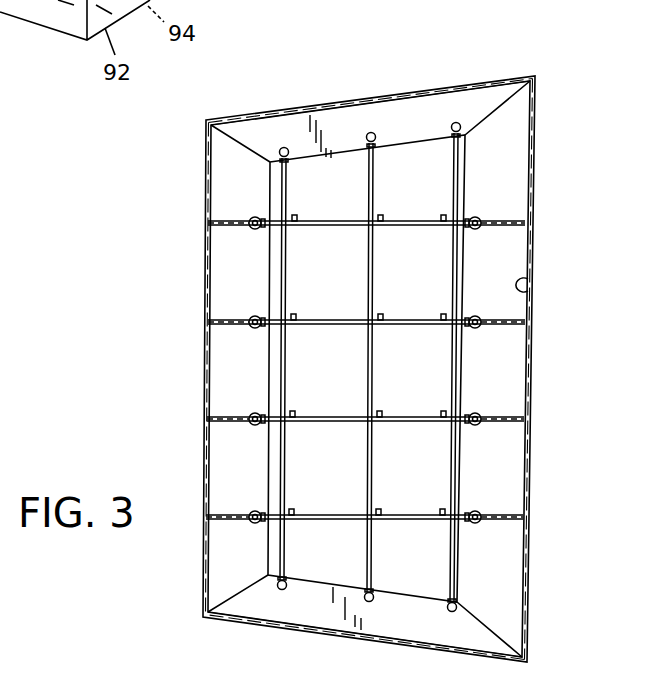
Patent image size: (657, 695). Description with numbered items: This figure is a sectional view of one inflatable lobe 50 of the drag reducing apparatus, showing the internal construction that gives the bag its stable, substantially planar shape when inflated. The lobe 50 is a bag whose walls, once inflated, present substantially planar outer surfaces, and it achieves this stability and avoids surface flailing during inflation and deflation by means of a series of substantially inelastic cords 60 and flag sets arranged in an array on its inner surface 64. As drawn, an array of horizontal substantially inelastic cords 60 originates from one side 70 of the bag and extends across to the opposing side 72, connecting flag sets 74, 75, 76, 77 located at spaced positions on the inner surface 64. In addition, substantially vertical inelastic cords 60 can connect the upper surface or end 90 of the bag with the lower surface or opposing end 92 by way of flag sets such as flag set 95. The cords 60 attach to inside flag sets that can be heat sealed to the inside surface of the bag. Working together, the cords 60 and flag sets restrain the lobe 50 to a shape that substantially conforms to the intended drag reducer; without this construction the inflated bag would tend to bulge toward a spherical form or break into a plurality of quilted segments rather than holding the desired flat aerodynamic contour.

The lobe 50 is at (402, 68).
The substantially inelastic cord 60 is at (404, 221).
The inner surface 64 is at (530, 290).
The one side of the bag 70 is at (535, 162).
The opposing side of the bag 72 is at (203, 267).
The flag set 74 is at (228, 222).
The flag set 75 is at (225, 325).
The flag set 76 is at (228, 421).
The flag set 77 is at (228, 519).
The upper surface or end 90 is at (301, 106).
The lower surface or opposing end 92 is at (272, 627).
The flag set 95 is at (346, 123).